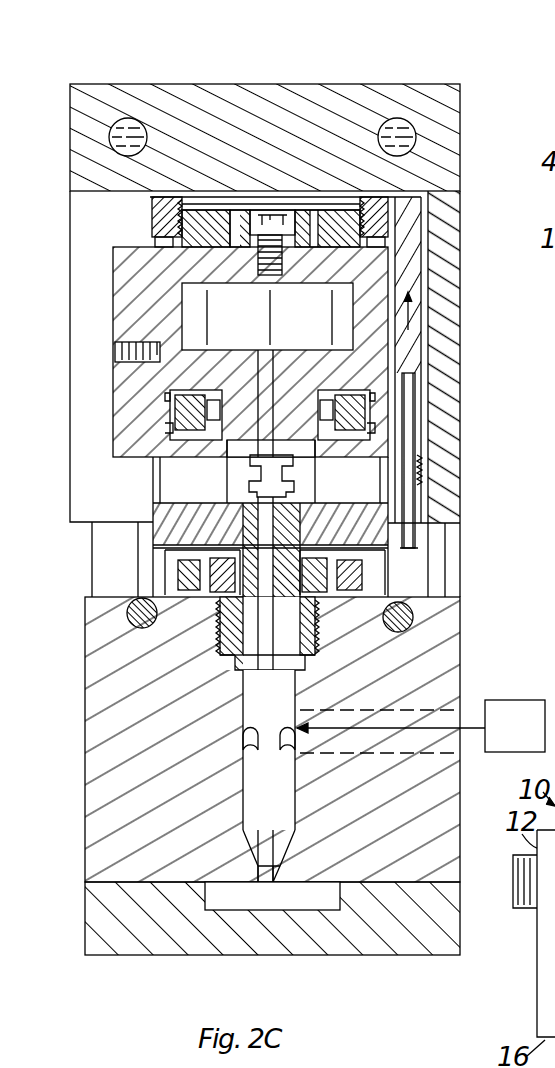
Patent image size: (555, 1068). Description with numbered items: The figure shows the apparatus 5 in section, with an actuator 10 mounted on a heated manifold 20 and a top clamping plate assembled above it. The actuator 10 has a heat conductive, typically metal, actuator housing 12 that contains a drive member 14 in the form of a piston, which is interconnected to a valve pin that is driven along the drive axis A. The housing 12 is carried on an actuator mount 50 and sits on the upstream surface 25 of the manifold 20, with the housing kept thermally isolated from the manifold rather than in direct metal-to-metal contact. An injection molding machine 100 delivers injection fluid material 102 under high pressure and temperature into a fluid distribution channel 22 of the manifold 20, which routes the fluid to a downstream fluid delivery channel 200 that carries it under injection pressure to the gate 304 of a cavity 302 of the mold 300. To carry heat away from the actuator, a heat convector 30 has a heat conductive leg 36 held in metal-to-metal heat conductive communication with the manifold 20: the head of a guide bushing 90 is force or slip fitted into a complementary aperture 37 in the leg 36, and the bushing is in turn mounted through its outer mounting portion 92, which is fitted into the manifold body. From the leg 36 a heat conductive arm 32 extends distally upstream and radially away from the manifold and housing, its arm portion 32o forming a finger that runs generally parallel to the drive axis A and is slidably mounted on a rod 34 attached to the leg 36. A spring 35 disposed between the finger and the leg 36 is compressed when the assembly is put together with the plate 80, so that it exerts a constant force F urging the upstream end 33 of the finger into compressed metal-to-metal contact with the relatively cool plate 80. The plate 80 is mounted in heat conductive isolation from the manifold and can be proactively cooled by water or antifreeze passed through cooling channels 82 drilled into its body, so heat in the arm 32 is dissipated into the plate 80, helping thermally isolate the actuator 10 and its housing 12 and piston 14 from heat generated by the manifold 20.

The apparatus 5 is at (104, 50).
The actuator 10 is at (96, 232).
The actuator housing 12 is at (112, 283).
The drive member 14 is at (292, 356).
The heated manifold 20 is at (296, 689).
The fluid distribution channel 22 is at (415, 697).
The upstream surface 25 is at (452, 600).
The heat convector 30 is at (425, 210).
The heat conductive arm 32 is at (425, 232).
The arm portion 32o is at (428, 280).
The upstream end 33 is at (405, 197).
The rod 34 is at (425, 535).
The spring 35 is at (420, 468).
The heat conductive leg 36 is at (392, 548).
The aperture 37 is at (246, 500).
The actuator mount 50 is at (150, 575).
The plate 80 is at (366, 82).
The cooling channels 82 is at (110, 134).
The guide bushing 90 is at (243, 535).
The outer mounting portion 92 is at (223, 632).
The injection molding machine 100 is at (536, 744).
The injection fluid material 102 is at (470, 728).
The fluid delivery channel 200 is at (293, 787).
The mold 300 is at (272, 942).
The cavity 302 is at (320, 900).
The gate 304 is at (268, 878).
The drive axis A is at (268, 312).
The force F is at (430, 314).